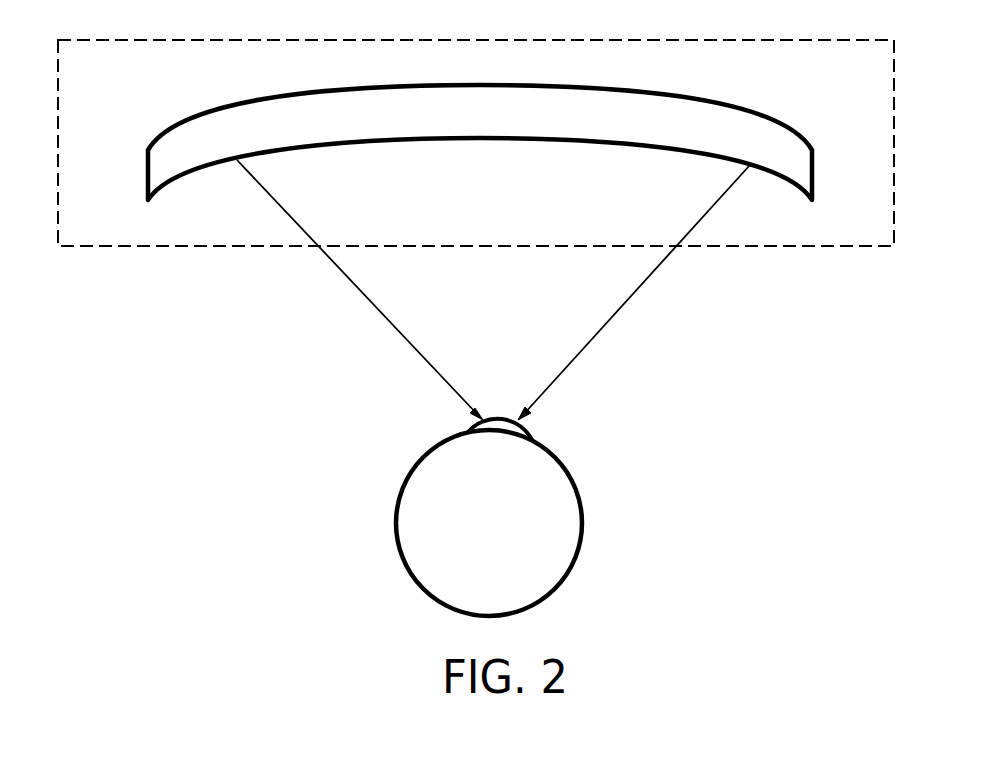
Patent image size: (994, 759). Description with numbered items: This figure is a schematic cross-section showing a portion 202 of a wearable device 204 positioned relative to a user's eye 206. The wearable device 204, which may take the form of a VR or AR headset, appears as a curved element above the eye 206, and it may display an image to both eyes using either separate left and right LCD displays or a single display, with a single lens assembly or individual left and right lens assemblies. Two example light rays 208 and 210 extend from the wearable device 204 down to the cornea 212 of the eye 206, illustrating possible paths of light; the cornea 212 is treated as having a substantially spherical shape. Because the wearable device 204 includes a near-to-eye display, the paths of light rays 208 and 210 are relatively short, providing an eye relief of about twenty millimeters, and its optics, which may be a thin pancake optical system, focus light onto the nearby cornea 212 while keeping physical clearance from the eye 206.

The portion of a wearable device 202 is at (238, 247).
The wearable device 204 is at (347, 128).
The user's eye 206 is at (393, 503).
The light ray 208 is at (382, 310).
The light ray 210 is at (613, 316).
The cornea 212 is at (533, 434).